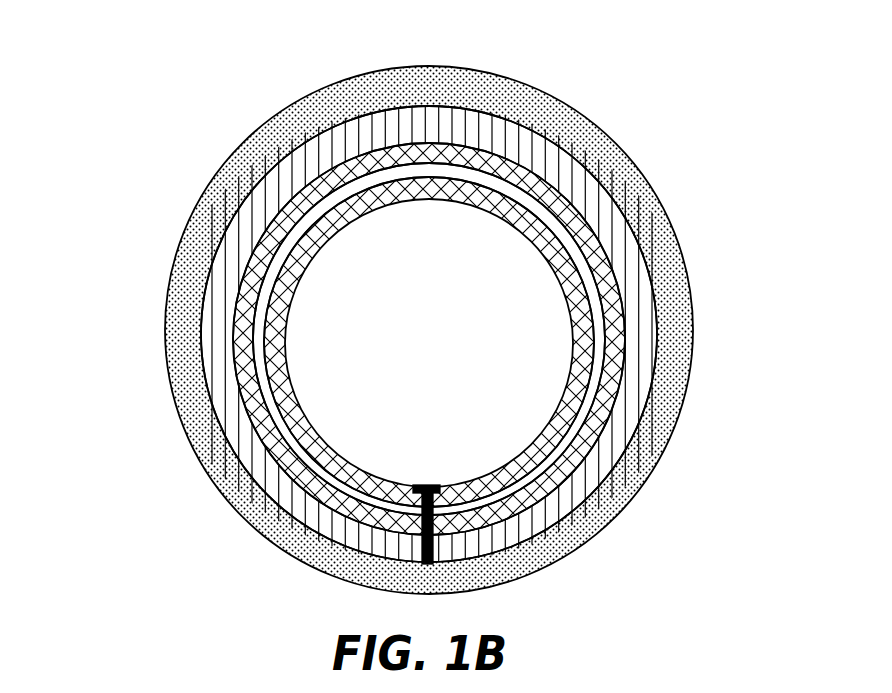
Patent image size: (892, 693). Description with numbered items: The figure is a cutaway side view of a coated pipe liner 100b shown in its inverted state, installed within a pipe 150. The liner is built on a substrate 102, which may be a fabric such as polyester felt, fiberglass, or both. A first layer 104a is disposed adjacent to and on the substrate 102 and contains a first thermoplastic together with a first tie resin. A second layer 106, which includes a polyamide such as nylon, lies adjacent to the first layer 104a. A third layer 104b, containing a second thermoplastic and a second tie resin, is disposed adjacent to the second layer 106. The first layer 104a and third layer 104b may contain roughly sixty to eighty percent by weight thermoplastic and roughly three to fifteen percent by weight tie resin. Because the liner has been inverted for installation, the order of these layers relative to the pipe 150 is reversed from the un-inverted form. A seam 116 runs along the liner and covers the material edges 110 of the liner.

The pipe liner 100b is at (434, 308).
The pipe 150 is at (615, 167).
The substrate 102 is at (570, 493).
The first layer 104a is at (600, 427).
The second layer 106 is at (598, 372).
The third layer 104b is at (572, 288).
The material edges 110 is at (434, 553).
The seam 116 is at (410, 487).